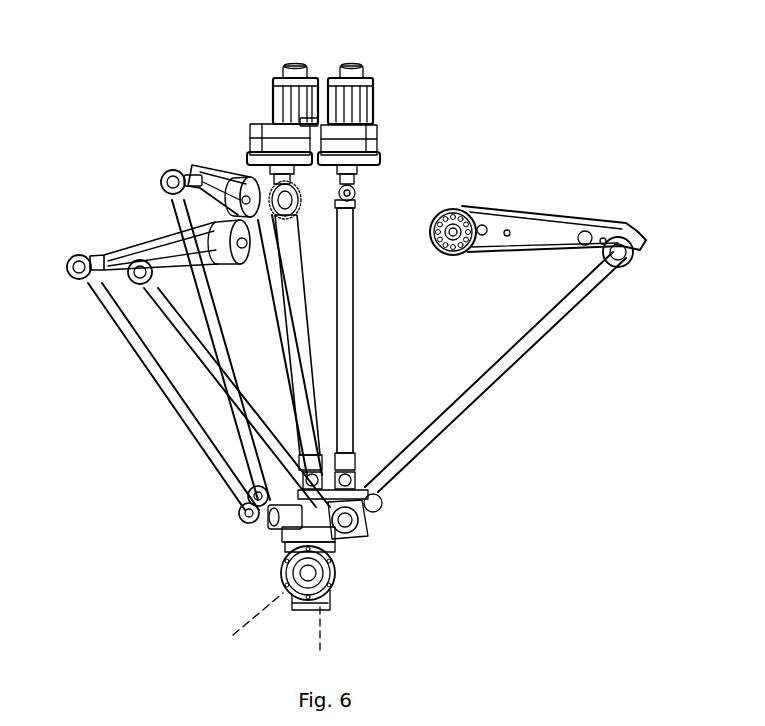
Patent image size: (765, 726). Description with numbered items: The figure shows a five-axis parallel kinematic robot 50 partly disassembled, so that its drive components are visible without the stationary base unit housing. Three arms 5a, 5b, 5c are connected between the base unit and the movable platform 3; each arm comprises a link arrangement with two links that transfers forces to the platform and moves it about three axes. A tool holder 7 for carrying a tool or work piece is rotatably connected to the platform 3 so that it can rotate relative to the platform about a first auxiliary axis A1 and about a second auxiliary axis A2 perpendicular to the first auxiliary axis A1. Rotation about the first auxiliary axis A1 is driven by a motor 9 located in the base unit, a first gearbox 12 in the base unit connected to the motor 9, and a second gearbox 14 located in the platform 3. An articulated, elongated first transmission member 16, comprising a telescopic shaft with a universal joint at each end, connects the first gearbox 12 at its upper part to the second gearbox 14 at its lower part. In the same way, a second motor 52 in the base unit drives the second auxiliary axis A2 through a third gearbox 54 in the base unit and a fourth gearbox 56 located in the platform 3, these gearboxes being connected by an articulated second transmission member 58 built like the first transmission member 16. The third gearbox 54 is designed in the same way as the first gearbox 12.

The second motor 52 is at (280, 93).
The third gearbox 54 is at (252, 148).
The motor 9 is at (357, 100).
The first gearbox 12 is at (372, 150).
The arm 5a is at (136, 230).
The arm 5b is at (570, 207).
The arm 5c is at (206, 150).
The parallel kinematic robot 50 is at (84, 321).
The second transmission member 58 is at (293, 337).
The first transmission member 16 is at (362, 364).
The second gearbox 14 is at (350, 490).
The fourth gearbox 56 is at (330, 533).
The platform 3 is at (282, 517).
The tool holder 7 is at (310, 610).
The first auxiliary axis A1 is at (322, 624).
The second auxiliary axis A2 is at (235, 614).